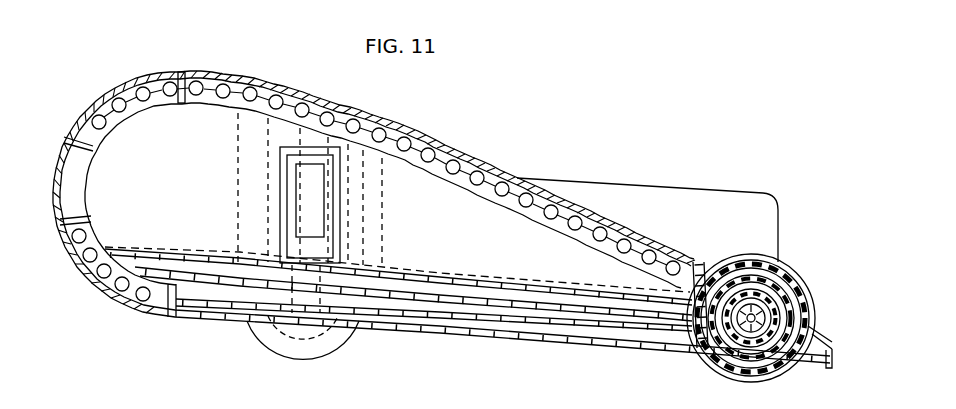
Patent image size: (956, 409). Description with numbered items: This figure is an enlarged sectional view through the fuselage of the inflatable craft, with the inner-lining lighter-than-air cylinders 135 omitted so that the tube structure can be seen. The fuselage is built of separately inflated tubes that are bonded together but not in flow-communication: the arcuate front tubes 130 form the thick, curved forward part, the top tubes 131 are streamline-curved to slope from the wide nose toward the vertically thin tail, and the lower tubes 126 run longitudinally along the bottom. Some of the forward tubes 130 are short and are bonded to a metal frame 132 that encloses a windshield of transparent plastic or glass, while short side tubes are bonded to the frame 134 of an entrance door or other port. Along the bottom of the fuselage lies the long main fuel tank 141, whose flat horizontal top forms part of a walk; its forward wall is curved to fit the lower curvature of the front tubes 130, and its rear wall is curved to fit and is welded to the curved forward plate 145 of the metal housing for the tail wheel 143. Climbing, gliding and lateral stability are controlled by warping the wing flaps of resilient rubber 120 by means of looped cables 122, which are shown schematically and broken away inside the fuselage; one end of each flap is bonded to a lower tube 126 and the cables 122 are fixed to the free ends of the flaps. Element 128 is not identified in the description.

The wing flaps of resilient rubber 120 is at (354, 325).
The looped cables 122 is at (378, 273).
The lower tubes 126 is at (452, 335).
The intermediate rail and bracket 128 is at (226, 302).
The front tubes 130 is at (368, 192).
The top tubes 131 is at (374, 117).
The metal frame 132 is at (88, 150).
The frame 134 is at (342, 194).
The lower cylinders 135 is at (476, 281).
The main tank 141 is at (193, 256).
The tail wheel 143 is at (722, 376).
The curved forward plate 145 is at (699, 352).